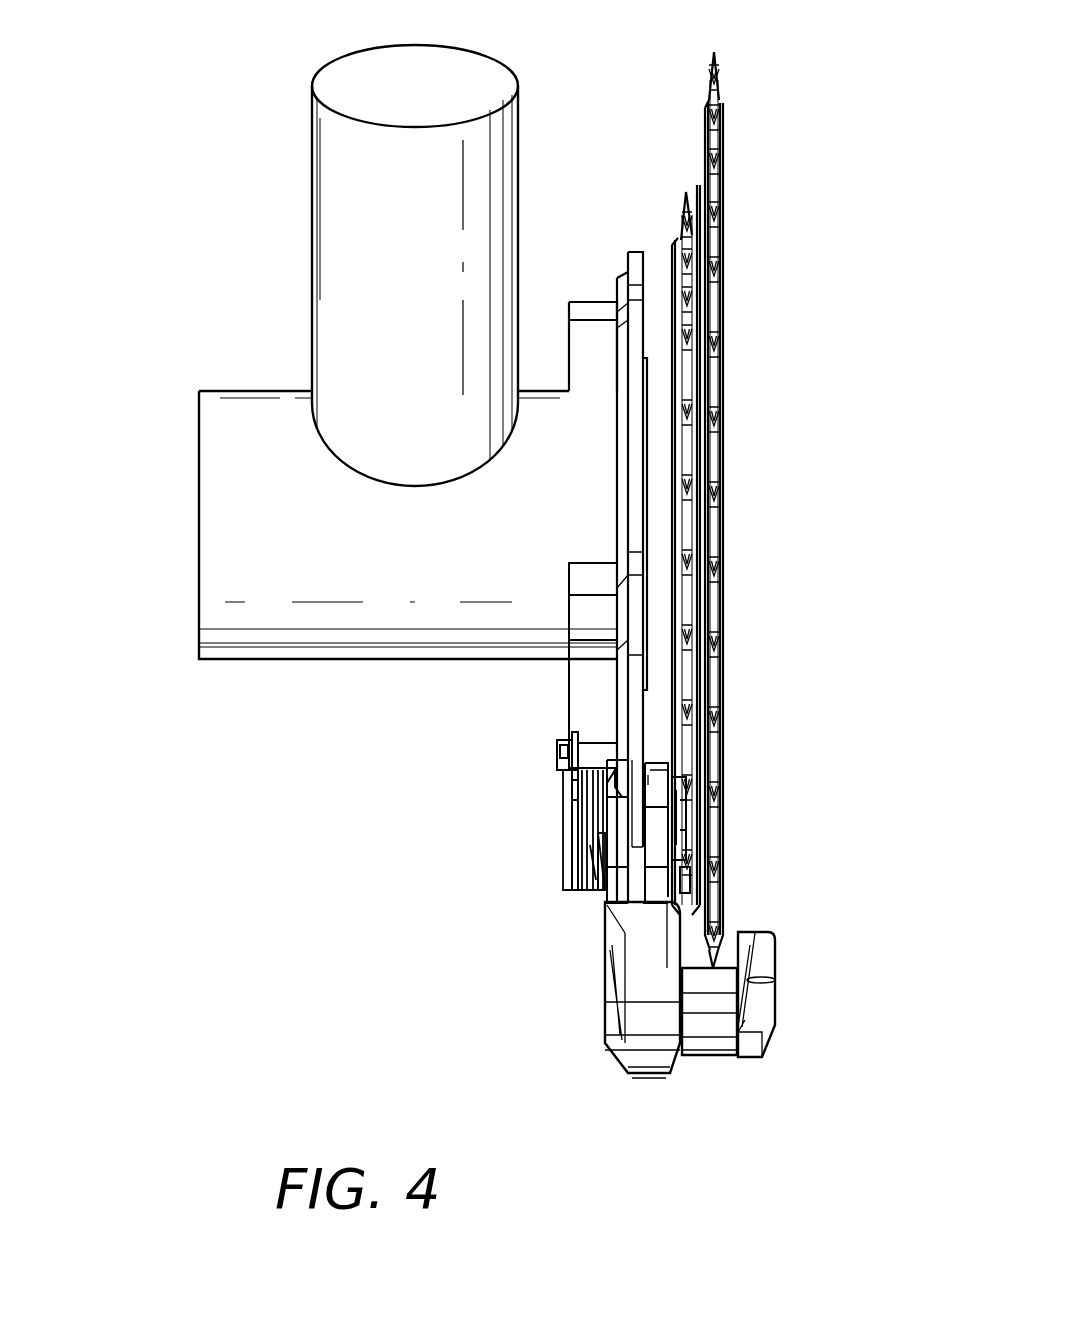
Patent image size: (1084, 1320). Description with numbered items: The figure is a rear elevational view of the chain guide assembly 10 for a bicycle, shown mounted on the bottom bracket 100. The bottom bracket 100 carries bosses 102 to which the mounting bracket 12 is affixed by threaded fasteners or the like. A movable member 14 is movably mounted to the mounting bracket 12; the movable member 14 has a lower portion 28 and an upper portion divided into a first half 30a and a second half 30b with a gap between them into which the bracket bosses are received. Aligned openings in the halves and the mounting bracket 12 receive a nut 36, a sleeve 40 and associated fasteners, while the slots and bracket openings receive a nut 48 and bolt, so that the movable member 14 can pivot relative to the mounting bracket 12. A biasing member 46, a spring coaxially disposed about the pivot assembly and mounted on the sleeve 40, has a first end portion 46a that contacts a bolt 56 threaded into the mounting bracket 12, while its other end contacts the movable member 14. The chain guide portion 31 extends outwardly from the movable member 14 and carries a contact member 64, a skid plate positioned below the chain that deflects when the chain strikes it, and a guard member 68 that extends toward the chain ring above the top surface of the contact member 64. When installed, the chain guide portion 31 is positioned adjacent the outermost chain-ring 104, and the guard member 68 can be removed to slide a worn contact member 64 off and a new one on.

The chain guide assembly 10 is at (607, 618).
The mounting bracket 12 is at (637, 328).
The movable member 14 is at (627, 932).
The lower portion 28 is at (652, 1052).
The first half 30a is at (612, 797).
The second half 30b is at (657, 772).
The chain guide portion 31 is at (706, 1043).
The nut 36 is at (683, 810).
The sleeve 40 is at (598, 878).
The biasing member 46 is at (578, 841).
The first end portion 46a is at (560, 741).
The nut 48 is at (686, 877).
The bolt 56 is at (557, 762).
The contact member 64 is at (718, 1003).
The guard member 68 is at (771, 943).
The bottom bracket 100 is at (218, 548).
The bosses 102 is at (590, 312).
The chain-ring 104 is at (720, 97).